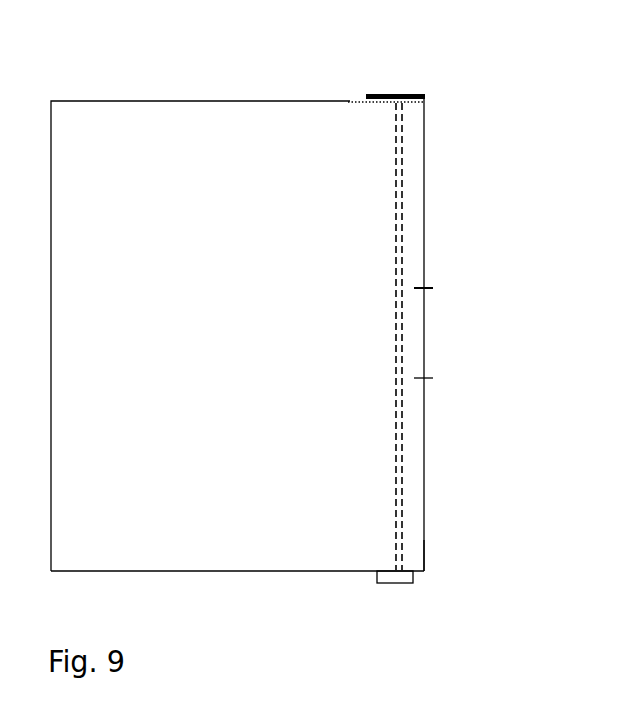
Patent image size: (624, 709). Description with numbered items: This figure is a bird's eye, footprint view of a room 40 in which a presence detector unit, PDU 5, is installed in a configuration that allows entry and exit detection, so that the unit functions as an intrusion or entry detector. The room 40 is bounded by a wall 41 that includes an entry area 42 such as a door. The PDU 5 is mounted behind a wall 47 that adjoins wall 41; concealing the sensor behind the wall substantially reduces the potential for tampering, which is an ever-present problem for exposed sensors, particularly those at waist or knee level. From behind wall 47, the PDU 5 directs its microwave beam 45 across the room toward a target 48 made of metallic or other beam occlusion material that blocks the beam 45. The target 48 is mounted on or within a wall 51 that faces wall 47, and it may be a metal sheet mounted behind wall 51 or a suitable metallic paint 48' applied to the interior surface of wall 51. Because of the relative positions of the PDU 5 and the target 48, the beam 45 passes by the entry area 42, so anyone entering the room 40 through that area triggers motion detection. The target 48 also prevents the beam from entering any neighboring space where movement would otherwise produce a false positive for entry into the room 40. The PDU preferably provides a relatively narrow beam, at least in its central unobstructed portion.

The PDU 5 is at (413, 580).
The room 40 is at (454, 247).
The wall 41 is at (423, 547).
The entry area 42 is at (425, 334).
The microwave beam 45 is at (404, 178).
The wall 47 is at (248, 571).
The target 48 is at (439, 91).
The metallic paint 48' is at (344, 74).
The wall 51 is at (230, 101).